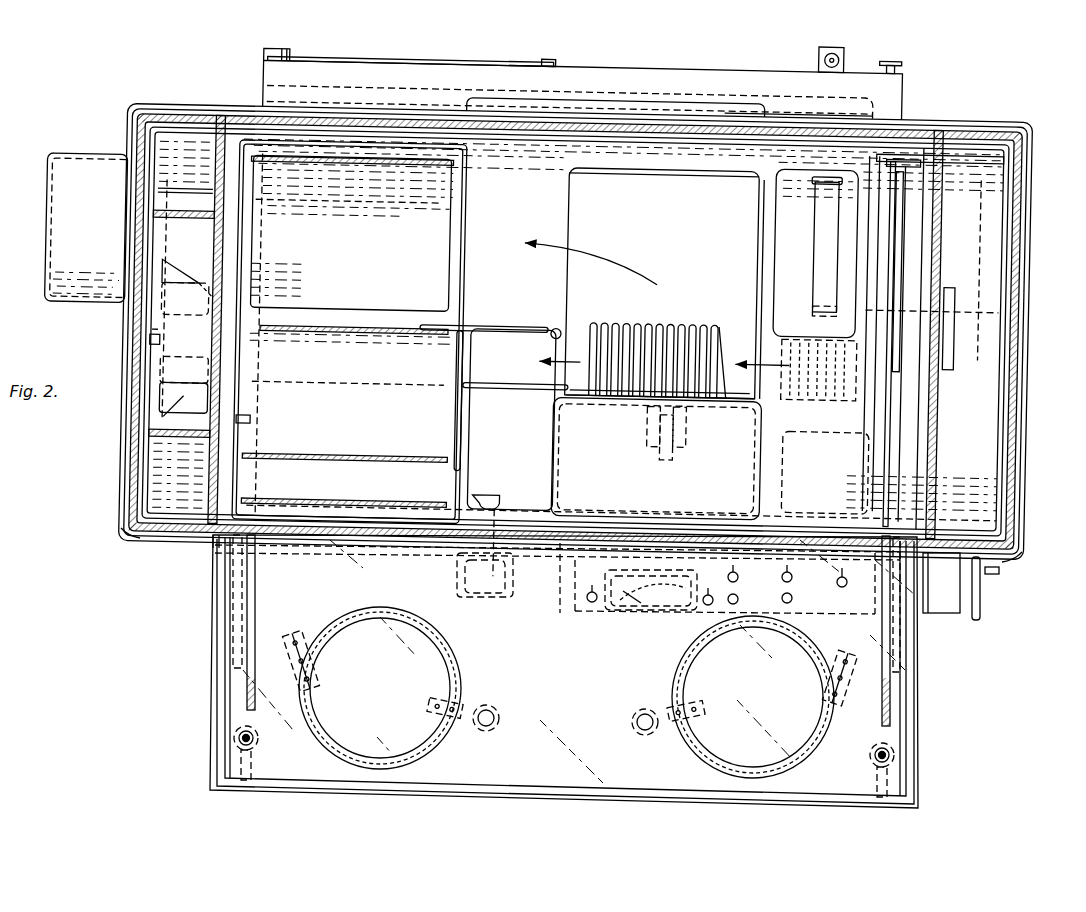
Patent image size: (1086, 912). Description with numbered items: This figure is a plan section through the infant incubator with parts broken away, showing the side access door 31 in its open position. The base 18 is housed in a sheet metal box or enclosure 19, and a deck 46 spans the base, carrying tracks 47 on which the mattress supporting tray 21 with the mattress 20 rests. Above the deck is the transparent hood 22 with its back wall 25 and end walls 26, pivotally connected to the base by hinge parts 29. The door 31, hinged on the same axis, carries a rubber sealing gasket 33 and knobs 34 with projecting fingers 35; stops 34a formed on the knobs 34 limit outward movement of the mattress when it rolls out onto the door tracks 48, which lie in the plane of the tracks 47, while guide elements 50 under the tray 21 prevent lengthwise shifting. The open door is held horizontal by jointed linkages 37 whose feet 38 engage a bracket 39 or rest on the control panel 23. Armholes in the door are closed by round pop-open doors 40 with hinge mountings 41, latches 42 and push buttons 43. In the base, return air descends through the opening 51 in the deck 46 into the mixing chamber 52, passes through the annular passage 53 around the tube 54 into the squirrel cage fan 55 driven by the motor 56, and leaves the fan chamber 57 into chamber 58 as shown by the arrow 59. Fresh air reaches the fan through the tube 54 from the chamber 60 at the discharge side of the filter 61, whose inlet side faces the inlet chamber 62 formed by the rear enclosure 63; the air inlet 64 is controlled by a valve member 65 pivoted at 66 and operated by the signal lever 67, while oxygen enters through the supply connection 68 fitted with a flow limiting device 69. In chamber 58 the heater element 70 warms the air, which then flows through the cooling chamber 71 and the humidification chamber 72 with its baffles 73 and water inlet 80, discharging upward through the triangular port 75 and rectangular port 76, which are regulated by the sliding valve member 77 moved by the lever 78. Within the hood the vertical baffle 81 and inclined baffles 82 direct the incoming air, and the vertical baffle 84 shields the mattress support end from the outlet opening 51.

The base 18 is at (710, 163).
The box or enclosure 19 is at (986, 121).
The mattress 20 is at (437, 271).
The support or tray 21 is at (459, 231).
The hood 22 is at (1026, 207).
The control panel 23 is at (947, 607).
The back wall 25 is at (940, 128).
The end walls 26 is at (143, 132).
The hinge parts 29 is at (138, 540).
The access door 31 is at (531, 776).
The rubber sealing gasket 33 is at (213, 637).
The knobs 34 is at (234, 727).
The stops 34a is at (239, 738).
The projecting fingers 35 is at (232, 758).
The jointed linkages 37 is at (233, 606).
The foot 38 is at (252, 561).
The bracket 39 is at (212, 550).
The pop-open doors 40 is at (430, 661).
The hinge mounting 41 is at (305, 636).
The latches 42 is at (471, 700).
The push buttons 43 is at (497, 731).
The deck 46 is at (459, 308).
The tracks or supports 47 is at (258, 406).
The supports or tracks 48 is at (250, 601).
The guide elements 50 is at (241, 421).
The opening 51 is at (955, 338).
The mixing chamber 52 is at (813, 244).
The annular passage 53 is at (809, 298).
The tube 54 is at (820, 218).
The radial or squirrel cage fan 55 is at (778, 343).
The motor 56 is at (770, 463).
The chamber 57 is at (773, 396).
The chamber 58 is at (665, 283).
The arrow 59 is at (740, 361).
The chamber 60 is at (745, 142).
The filter 61 is at (704, 96).
The inlet chamber 62 is at (723, 92).
The enclosure 63 is at (642, 70).
The air inlet 64 is at (505, 58).
The valve member 65 is at (572, 76).
The pivot 66 is at (540, 58).
The lever 67 is at (367, 53).
The oxygen supply connection 68 is at (856, 54).
The oxygen flow limiting device 69 is at (826, 48).
The heater element 70 is at (690, 318).
The chamber 71 is at (590, 268).
The chamber 72 is at (520, 420).
The baffles 73 is at (455, 418).
The discharge port 75 is at (162, 278).
The discharge port 76 is at (152, 403).
The rectangular valve member 77 is at (148, 410).
The lever 78 is at (150, 341).
The water inlet 80 is at (500, 512).
The baffle 81 is at (215, 240).
The baffles 82 is at (205, 193).
The vertical baffle 84 is at (940, 243).